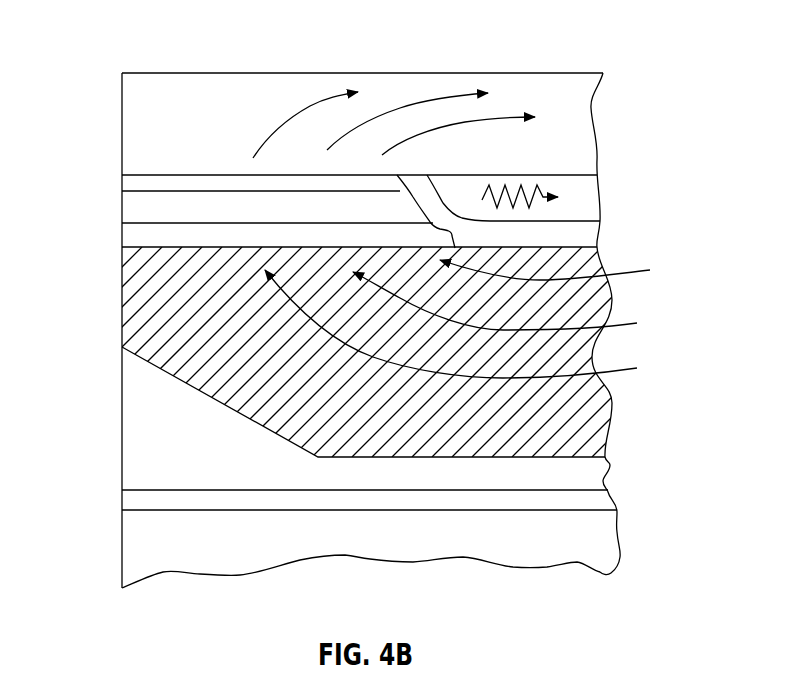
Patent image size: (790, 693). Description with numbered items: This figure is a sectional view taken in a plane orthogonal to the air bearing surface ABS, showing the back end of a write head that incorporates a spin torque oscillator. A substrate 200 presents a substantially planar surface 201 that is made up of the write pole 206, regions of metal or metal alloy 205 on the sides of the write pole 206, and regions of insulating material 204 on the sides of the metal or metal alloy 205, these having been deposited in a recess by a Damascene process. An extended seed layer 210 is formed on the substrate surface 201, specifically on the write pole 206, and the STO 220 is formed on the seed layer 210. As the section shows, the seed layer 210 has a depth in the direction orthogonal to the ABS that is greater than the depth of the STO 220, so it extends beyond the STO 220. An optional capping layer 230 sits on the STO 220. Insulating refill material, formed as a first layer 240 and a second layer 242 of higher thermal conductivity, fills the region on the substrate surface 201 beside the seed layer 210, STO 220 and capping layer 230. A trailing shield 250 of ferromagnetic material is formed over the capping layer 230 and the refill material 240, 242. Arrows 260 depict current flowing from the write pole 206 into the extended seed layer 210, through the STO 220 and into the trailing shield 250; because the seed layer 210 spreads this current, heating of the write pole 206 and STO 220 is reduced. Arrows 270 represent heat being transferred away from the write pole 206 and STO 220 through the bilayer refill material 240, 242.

The substrate 200 is at (143, 558).
The insulating material 204 is at (143, 502).
The metal or metal alloy 205 is at (143, 428).
The write pole 206 is at (143, 307).
The substrate surface 201 is at (138, 250).
The extended seed layer 210 is at (143, 240).
The spin torque oscillator 220 is at (143, 207).
The capping layer 230 is at (143, 177).
The first layer of insulating refill material 240 is at (592, 233).
The second layer of insulating refill material 242 is at (590, 187).
The trailing shield 250 is at (580, 118).
The arrows showing current flow 260 is at (330, 97).
The arrows representing heat transfer 270 is at (520, 193).
The air bearing surface ABS is at (122, 132).